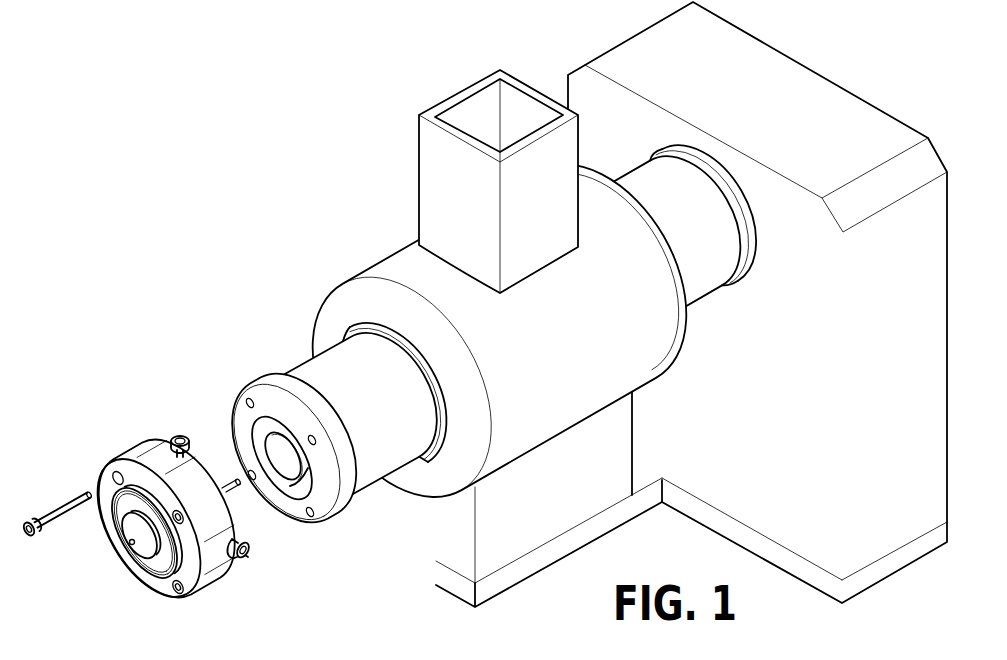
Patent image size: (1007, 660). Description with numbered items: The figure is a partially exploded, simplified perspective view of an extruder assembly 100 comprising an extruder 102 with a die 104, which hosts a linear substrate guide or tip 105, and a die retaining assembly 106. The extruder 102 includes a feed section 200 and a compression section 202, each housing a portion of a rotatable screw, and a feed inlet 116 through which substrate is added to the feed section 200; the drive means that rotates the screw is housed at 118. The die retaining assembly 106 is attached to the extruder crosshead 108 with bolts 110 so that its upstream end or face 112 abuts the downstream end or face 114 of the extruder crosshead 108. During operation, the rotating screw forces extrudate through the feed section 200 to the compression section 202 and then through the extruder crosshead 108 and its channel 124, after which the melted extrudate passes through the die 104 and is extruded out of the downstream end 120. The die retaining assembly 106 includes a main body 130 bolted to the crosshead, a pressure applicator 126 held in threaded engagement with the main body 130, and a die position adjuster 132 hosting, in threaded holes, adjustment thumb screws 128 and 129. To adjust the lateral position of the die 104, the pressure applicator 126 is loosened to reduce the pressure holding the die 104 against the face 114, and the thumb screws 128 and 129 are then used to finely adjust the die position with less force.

The extruder assembly 100 is at (484, 321).
The extruder 102 is at (568, 304).
The die 104 is at (143, 554).
The linear substrate guide 105 is at (129, 542).
The die retaining assembly 106 is at (185, 503).
The extruder crosshead 108 is at (276, 446).
The bolts 110 is at (58, 503).
The upstream end or face 112 is at (213, 468).
The downstream end or face 114 is at (240, 408).
The feed inlet 116 is at (527, 110).
The drive means housing 118 is at (812, 72).
The downstream end 120 is at (127, 553).
The channel 124 is at (292, 484).
The pressure applicator 126 is at (167, 596).
The thumb screw 128 is at (251, 557).
The thumb screw 129 is at (180, 436).
The main body 130 is at (115, 475).
The die position adjuster 132 is at (236, 574).
The feed section 200 is at (387, 259).
The compression section 202 is at (310, 362).